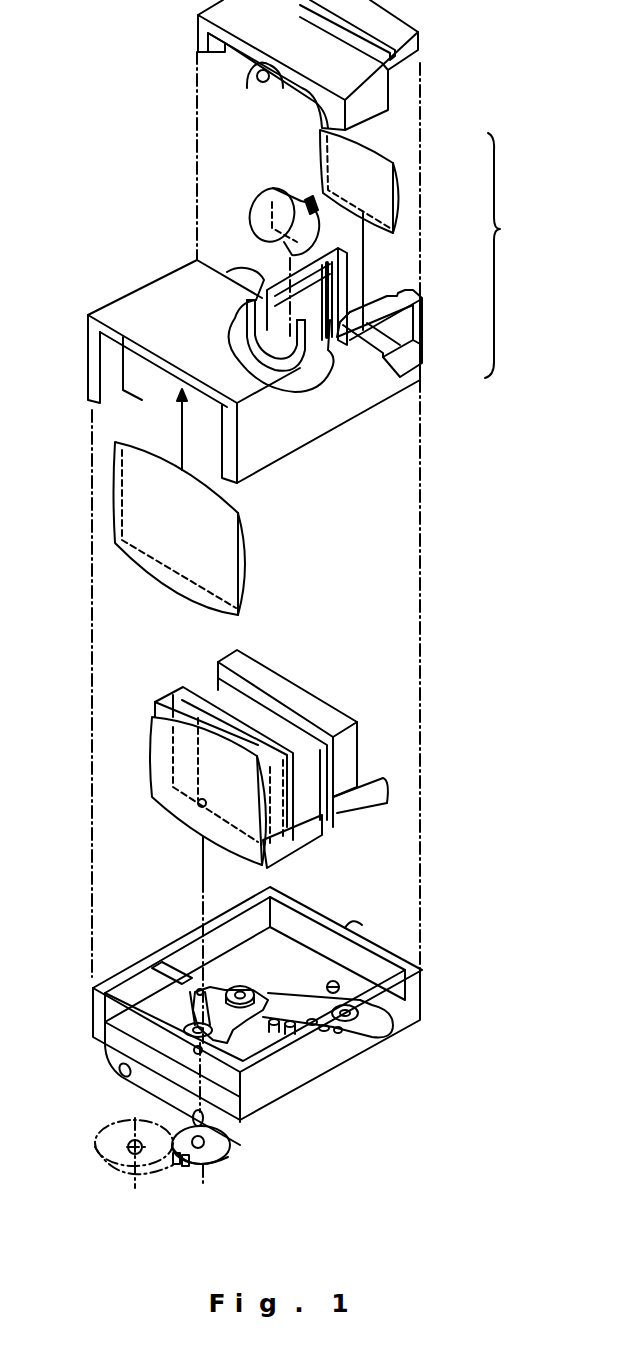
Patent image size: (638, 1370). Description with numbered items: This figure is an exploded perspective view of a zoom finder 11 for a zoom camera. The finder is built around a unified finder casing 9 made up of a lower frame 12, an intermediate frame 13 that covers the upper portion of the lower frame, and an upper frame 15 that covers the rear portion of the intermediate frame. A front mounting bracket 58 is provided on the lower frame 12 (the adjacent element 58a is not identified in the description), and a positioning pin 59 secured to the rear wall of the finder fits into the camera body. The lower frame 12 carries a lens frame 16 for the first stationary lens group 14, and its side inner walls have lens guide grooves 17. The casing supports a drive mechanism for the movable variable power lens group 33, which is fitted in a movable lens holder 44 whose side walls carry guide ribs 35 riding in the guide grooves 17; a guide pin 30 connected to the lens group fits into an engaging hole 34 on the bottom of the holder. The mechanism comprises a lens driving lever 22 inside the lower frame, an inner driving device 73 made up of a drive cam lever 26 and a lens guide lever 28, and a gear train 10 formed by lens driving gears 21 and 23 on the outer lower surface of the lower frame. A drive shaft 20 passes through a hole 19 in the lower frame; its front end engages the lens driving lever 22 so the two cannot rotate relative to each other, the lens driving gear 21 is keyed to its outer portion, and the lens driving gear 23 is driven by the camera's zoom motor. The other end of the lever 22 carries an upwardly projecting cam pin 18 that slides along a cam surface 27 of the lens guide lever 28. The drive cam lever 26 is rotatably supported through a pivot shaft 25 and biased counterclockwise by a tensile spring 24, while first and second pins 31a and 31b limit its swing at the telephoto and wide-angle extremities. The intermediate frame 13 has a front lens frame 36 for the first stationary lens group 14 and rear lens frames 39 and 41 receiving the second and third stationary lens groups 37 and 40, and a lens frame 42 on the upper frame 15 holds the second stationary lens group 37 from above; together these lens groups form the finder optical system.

The finder casing 9 is at (503, 255).
The gear train 10 is at (173, 1188).
The zoom finder 11 is at (480, 62).
The lower frame 12 is at (408, 1002).
The intermediate frame 13 is at (425, 350).
The first stationary lens group 14 is at (138, 522).
The upper frame 15 is at (380, 95).
The lens frame 16 is at (130, 1028).
The lens guide grooves 17 is at (197, 990).
The cam pin 18 is at (292, 1036).
The hole 19 is at (195, 1052).
The drive shaft 20 is at (227, 1150).
The lens driving gear 21 is at (203, 1183).
The lens driving lever 22 is at (277, 1034).
The lens driving gear 23 is at (97, 1172).
The tensile spring 24 is at (326, 1036).
The pivot shaft 25 is at (380, 1030).
The drive cam lever 26 is at (340, 1034).
The cam surface 27 is at (250, 1008).
The lens guide lever 28 is at (250, 992).
The guide pin 30 is at (198, 990).
The first pin 31a is at (340, 982).
The second pin 31b is at (315, 1030).
The movable variable power lens group 33 is at (162, 777).
The engaging hole 34 is at (202, 800).
The guide ribs 35 is at (318, 838).
The front lens frame 36 is at (148, 366).
The second stationary lens group 37 is at (273, 186).
The rear lens frame 39 is at (270, 345).
The third stationary lens group 40 is at (375, 182).
The rear lens frame 41 is at (360, 310).
The lens frame 42 is at (285, 80).
The movable lens holder 44 is at (240, 730).
The front mounting bracket 58 is at (118, 1073).
The hole 58a is at (115, 1075).
The positioning pin 59 is at (345, 922).
The inner driving device 73 is at (306, 982).